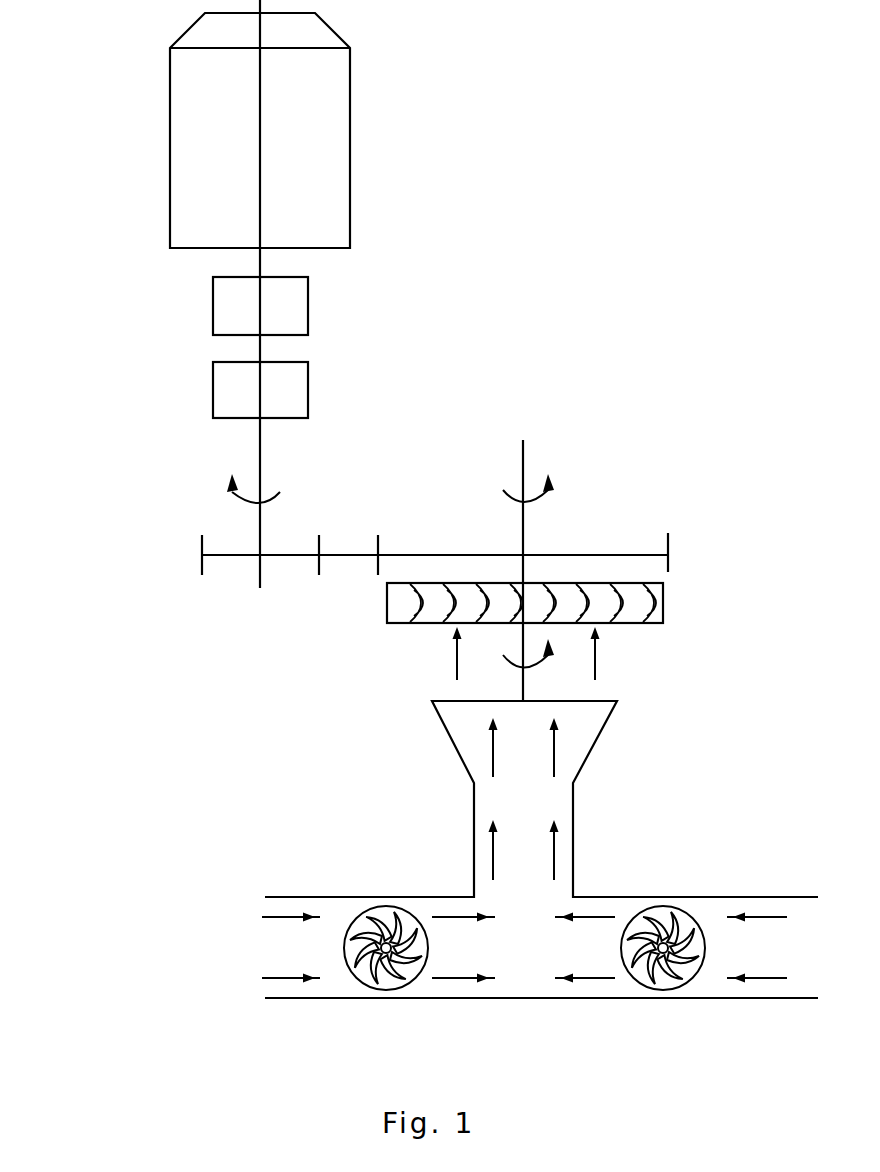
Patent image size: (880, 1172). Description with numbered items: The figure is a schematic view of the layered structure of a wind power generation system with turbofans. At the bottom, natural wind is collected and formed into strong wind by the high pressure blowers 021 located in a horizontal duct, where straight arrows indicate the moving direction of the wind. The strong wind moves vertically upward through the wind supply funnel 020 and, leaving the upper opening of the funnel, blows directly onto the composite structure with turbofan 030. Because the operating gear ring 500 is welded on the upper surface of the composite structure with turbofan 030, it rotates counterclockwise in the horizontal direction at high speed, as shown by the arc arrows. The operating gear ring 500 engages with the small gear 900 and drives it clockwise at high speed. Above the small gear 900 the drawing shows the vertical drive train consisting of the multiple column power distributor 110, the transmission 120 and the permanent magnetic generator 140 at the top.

The permanent magnetic generator 140 is at (192, 130).
The transmission 120 is at (171, 274).
The multiple column power distributor 110 is at (171, 360).
The small gear 900 is at (201, 521).
The operating gear ring 500 is at (565, 570).
The composite structure with turbofan 030 is at (570, 604).
The wind supply funnel 020 is at (540, 834).
The high pressure blower 021 is at (548, 866).